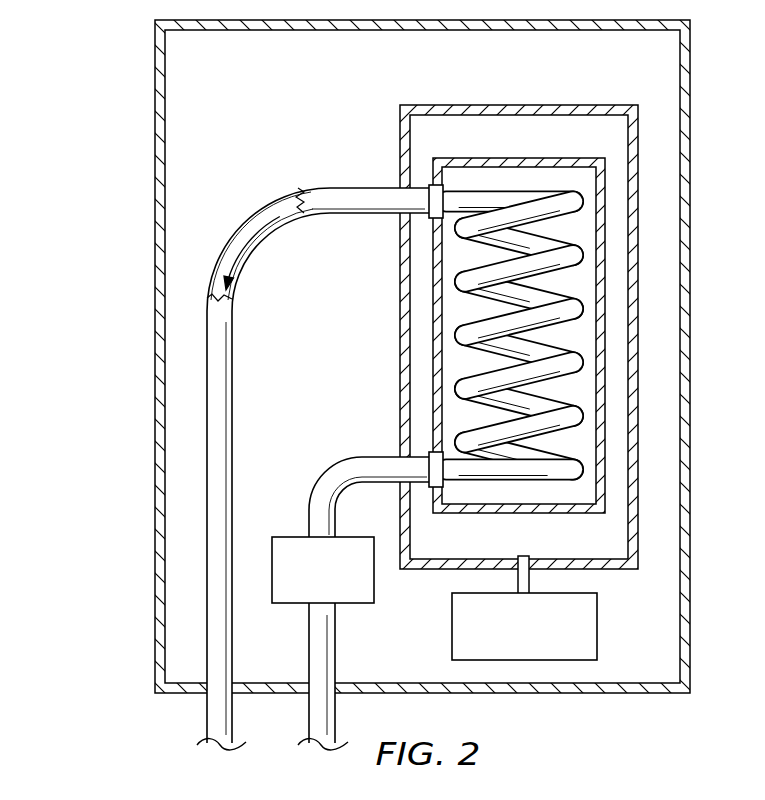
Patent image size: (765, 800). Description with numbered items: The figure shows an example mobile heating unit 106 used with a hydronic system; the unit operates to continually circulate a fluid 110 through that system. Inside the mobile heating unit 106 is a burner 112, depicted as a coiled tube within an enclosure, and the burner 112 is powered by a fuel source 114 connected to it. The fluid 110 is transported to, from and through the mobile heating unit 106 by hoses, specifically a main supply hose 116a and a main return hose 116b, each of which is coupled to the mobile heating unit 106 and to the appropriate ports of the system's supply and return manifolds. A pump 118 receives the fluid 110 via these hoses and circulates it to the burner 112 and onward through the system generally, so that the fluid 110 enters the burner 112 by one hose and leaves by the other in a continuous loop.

The mobile heating unit 106 is at (123, 204).
The fluid 110 is at (255, 231).
The burner 112 is at (531, 105).
The fuel source 114 is at (452, 630).
The main supply hose 116a is at (352, 188).
The main return hose 116b is at (350, 457).
The pump 118 is at (288, 604).